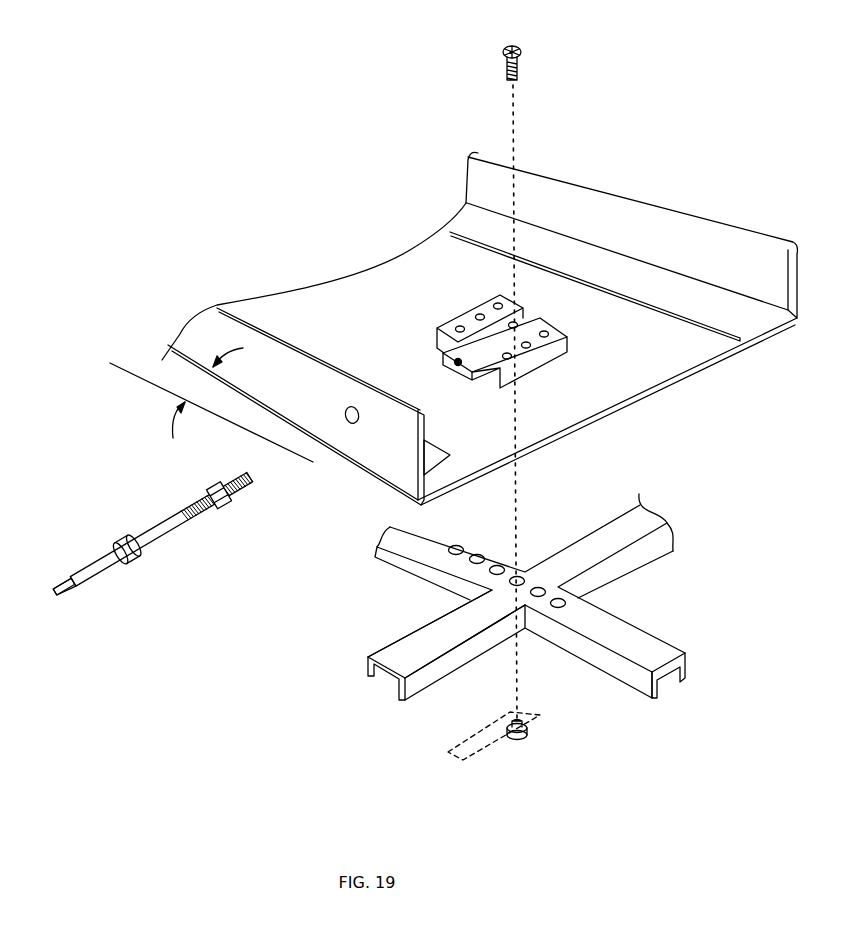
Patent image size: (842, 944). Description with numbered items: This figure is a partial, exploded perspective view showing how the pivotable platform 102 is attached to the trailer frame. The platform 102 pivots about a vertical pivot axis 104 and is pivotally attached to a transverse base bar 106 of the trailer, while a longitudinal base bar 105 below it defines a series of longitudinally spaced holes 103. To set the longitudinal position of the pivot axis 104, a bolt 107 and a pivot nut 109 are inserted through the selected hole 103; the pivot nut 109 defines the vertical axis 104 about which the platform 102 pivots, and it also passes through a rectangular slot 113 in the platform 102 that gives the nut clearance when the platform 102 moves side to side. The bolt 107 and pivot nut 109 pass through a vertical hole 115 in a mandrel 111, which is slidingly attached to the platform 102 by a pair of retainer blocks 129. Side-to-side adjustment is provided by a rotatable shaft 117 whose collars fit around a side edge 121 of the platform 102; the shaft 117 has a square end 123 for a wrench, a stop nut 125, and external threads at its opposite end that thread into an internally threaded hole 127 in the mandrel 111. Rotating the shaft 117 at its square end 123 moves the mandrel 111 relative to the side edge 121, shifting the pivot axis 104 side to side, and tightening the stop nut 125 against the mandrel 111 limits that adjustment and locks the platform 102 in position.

The pivotable platform 102 is at (383, 283).
The longitudinally spaced holes 103 is at (492, 573).
The vertical pivot axis 104 is at (515, 150).
The longitudinal base bar 105 is at (653, 648).
The transverse base bar 106 is at (390, 653).
The bolt 107 is at (522, 53).
The pivot nut 109 is at (527, 738).
The mandrel 111 is at (530, 315).
The rectangular slot 113 is at (470, 758).
The vertical hole 115 is at (511, 322).
The rotatable shaft 117 is at (167, 542).
The side edge 121 is at (288, 345).
The square end 123 is at (68, 598).
The stop nut 125 is at (226, 506).
The internally threaded hole 127 is at (454, 364).
The retainer blocks 129 is at (468, 320).